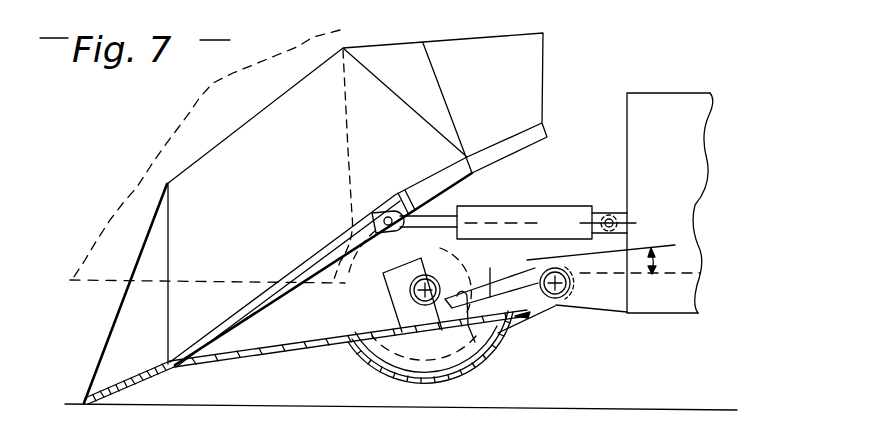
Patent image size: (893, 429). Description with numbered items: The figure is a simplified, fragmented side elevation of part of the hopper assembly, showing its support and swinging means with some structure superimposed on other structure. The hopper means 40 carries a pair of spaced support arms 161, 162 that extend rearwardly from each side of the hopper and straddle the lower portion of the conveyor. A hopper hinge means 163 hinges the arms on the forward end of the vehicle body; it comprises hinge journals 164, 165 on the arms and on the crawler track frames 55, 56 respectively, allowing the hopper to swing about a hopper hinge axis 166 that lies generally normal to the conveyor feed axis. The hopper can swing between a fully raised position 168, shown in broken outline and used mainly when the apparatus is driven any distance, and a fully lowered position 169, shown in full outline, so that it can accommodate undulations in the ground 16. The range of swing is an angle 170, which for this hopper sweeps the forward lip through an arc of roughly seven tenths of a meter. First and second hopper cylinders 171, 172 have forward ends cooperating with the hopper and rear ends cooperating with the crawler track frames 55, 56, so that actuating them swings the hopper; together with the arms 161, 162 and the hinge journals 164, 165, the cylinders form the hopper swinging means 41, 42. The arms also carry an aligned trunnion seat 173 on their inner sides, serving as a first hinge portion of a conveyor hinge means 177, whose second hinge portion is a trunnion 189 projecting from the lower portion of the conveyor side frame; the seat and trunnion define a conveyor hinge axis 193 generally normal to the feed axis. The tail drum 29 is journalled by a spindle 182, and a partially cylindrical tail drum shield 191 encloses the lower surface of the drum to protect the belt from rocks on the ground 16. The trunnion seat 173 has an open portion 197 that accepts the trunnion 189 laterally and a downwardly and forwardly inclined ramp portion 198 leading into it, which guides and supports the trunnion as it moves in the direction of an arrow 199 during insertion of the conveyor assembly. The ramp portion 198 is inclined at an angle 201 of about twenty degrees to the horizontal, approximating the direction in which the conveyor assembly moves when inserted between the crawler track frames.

The ground 16 is at (275, 404).
The tail drum 29 is at (363, 296).
The hopper means 40 is at (298, 218).
The hopper swinging means 41 is at (390, 248).
The hopper swinging means 42 is at (608, 105).
The crawler track frame 55 is at (670, 191).
The crawler track frame 56 is at (642, 108).
The support arm 161 is at (349, 348).
The support arm 162 is at (262, 355).
The hopper hinge means 163 is at (553, 323).
The hinge journal 164 is at (587, 303).
The hinge journal 165 is at (561, 298).
The hopper hinge axis 166 is at (573, 268).
The fully raised position 168 is at (135, 186).
The fully lowered position 169 is at (97, 362).
The angle 170 is at (206, 362).
The first hopper cylinder 171 is at (518, 213).
The second hopper cylinder 172 is at (535, 205).
The trunnion seat 173 is at (442, 305).
The conveyor hinge means 177 is at (403, 286).
The spindle 182 is at (428, 257).
The trunnion 189 is at (380, 313).
The tail drum shield 191 is at (400, 380).
The conveyor hinge axis 193 is at (490, 268).
The open portion 197 is at (465, 272).
The ramp portion 198 is at (508, 318).
The arrow 199 is at (466, 284).
The angle 201 is at (613, 275).